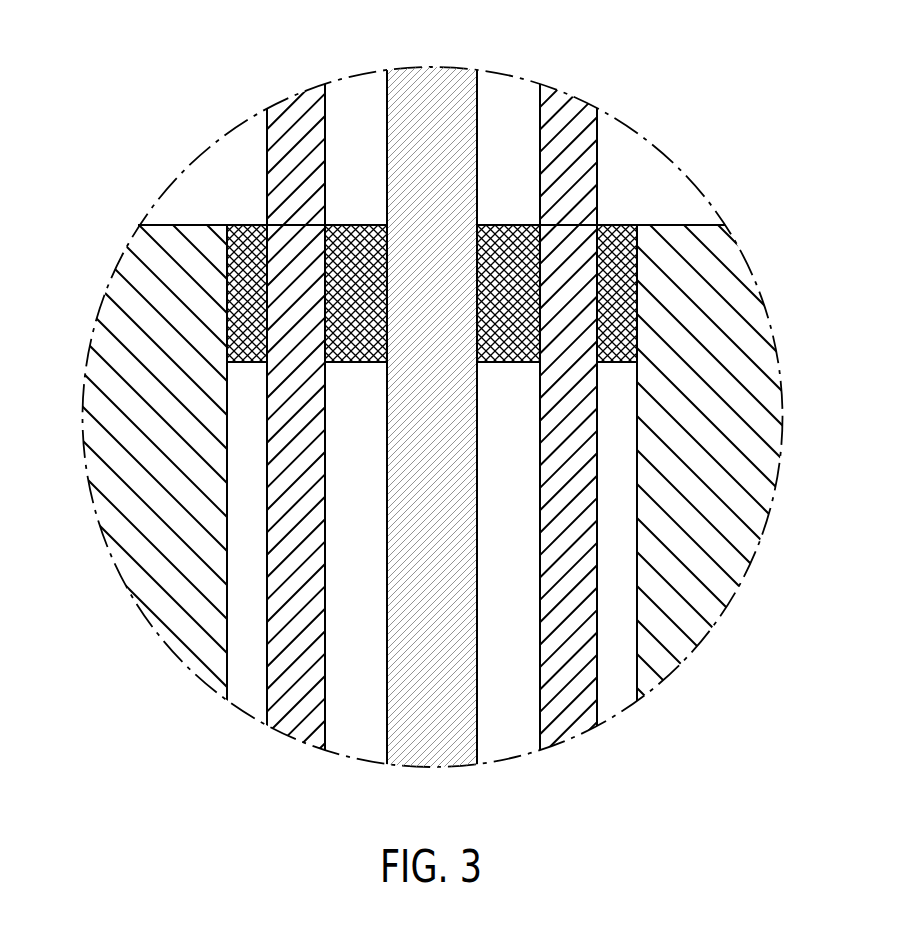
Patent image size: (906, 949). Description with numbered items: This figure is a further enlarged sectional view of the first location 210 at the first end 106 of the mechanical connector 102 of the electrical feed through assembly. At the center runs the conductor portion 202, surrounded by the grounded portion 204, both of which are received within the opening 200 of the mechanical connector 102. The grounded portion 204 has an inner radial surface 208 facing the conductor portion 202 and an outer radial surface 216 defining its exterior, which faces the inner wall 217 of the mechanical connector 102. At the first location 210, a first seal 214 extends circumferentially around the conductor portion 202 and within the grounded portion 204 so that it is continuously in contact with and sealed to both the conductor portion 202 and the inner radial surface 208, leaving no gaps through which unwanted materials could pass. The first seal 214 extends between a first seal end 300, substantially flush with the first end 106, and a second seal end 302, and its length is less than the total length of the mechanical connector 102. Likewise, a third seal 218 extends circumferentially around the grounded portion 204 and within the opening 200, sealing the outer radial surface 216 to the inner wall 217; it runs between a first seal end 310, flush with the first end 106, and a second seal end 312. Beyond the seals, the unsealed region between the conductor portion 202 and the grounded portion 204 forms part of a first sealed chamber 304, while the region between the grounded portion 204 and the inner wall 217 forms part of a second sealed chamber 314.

The mechanical connector 102 is at (728, 253).
The first end 106 is at (160, 225).
The opening 200 is at (238, 520).
The conductor portion 202 is at (427, 87).
The grounded portion 204 is at (555, 108).
The inner radial surface 208 is at (540, 447).
The first location 210 is at (233, 189).
The first seal 214 is at (347, 224).
The outer radial surface 216 is at (598, 483).
The inner wall 217 is at (227, 441).
The third seal 218 is at (247, 225).
The first seal end 300 is at (363, 223).
The second seal end 302 is at (352, 358).
The first sealed chamber 304 is at (510, 525).
The first seal end 310 is at (615, 224).
The second seal end 312 is at (637, 367).
The second sealed chamber 314 is at (625, 572).